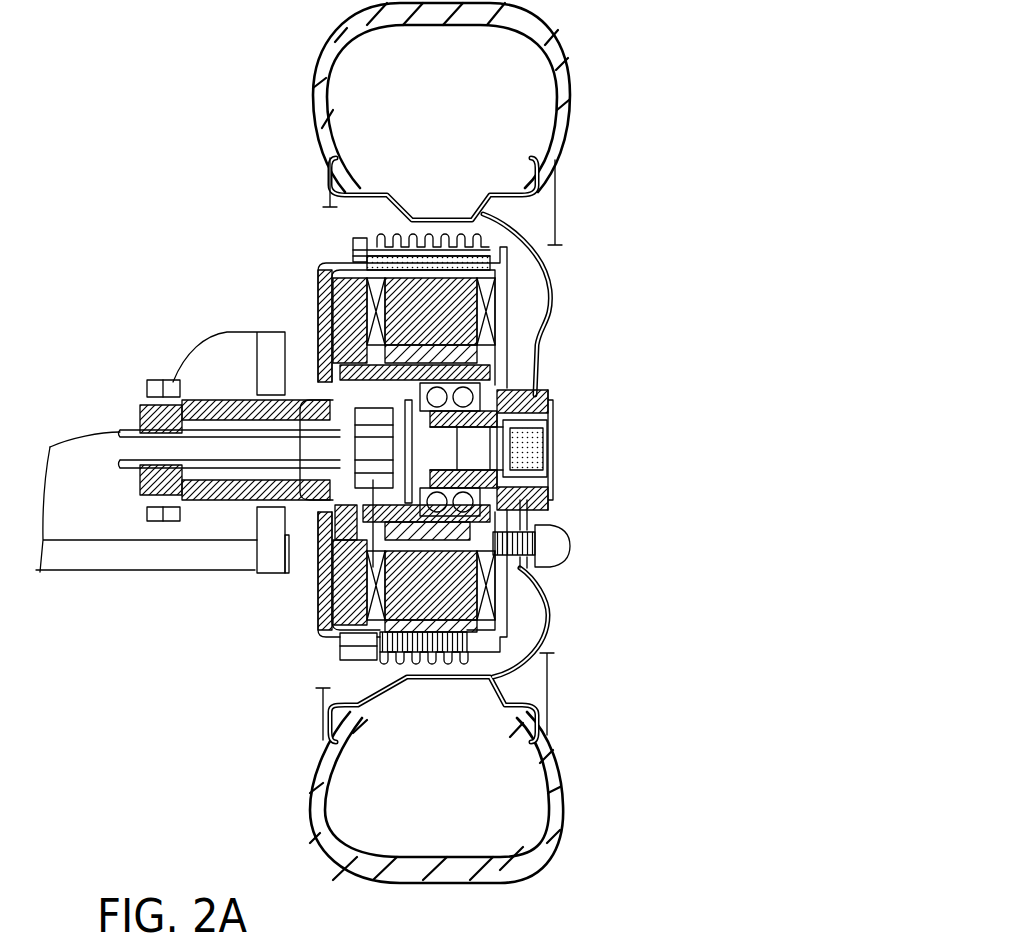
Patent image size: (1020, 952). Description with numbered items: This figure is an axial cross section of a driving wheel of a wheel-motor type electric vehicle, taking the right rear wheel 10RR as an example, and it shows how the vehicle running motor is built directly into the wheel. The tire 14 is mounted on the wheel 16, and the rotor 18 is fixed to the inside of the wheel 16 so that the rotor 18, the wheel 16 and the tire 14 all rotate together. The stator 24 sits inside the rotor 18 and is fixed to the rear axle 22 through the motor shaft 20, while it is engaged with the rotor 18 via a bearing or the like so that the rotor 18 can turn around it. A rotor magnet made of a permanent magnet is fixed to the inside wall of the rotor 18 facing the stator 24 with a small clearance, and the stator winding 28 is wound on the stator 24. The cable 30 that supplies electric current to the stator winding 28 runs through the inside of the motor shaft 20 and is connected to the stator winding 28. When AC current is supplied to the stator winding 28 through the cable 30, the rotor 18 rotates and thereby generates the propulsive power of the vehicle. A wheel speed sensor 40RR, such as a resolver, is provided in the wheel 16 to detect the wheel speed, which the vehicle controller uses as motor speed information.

The right rear wheel 10RR is at (155, 191).
The tire 14 is at (553, 776).
The wheel 16 is at (547, 610).
The rotor 18 is at (593, 378).
The motor shaft 20 is at (207, 482).
The rear axle 22 is at (90, 528).
The stator 24 is at (352, 246).
The stator winding 28 is at (490, 318).
The cable 30 is at (123, 433).
The wheel speed sensor 40RR is at (318, 592).